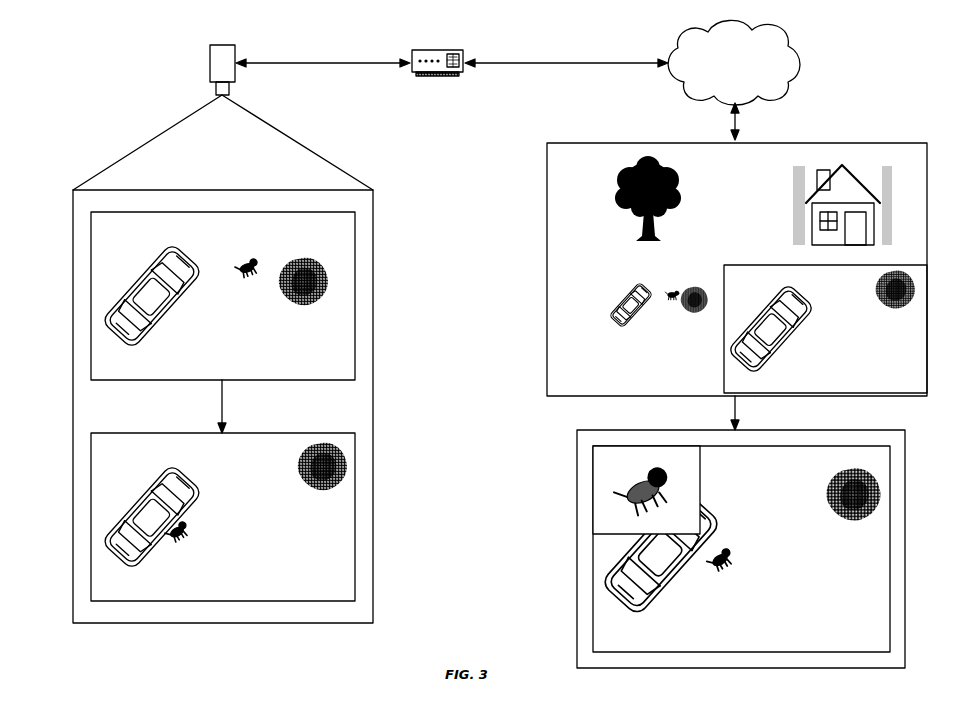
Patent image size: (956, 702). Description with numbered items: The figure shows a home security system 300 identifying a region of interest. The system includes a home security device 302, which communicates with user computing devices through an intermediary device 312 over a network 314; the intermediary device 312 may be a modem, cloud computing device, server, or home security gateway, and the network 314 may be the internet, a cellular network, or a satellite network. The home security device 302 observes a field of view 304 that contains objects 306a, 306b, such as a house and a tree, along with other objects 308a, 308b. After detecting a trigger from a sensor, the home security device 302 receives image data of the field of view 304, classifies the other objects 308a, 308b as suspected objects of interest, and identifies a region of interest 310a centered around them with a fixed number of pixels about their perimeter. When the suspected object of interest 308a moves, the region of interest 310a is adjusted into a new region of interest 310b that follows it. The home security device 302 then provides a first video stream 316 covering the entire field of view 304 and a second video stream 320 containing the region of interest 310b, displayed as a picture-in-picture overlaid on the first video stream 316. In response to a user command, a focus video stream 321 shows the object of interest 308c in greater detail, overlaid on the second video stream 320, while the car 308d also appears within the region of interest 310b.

The home security system 300 is at (58, 48).
The home security device 302 is at (210, 60).
The field of view 304 is at (128, 151).
The object 306a is at (808, 198).
The object 306b is at (622, 176).
The suspected object of interest 308a is at (248, 278).
The suspected object of interest 308b is at (186, 252).
The object of interest 308c is at (665, 478).
The car (detected object) 308d is at (655, 597).
The region of interest 310a is at (355, 290).
The new region of interest 310b is at (355, 522).
The intermediary device 312 is at (462, 72).
The network 314 is at (734, 62).
The first video stream 316 is at (565, 242).
The second video stream 320 is at (908, 265).
The focus video stream 321 is at (600, 465).